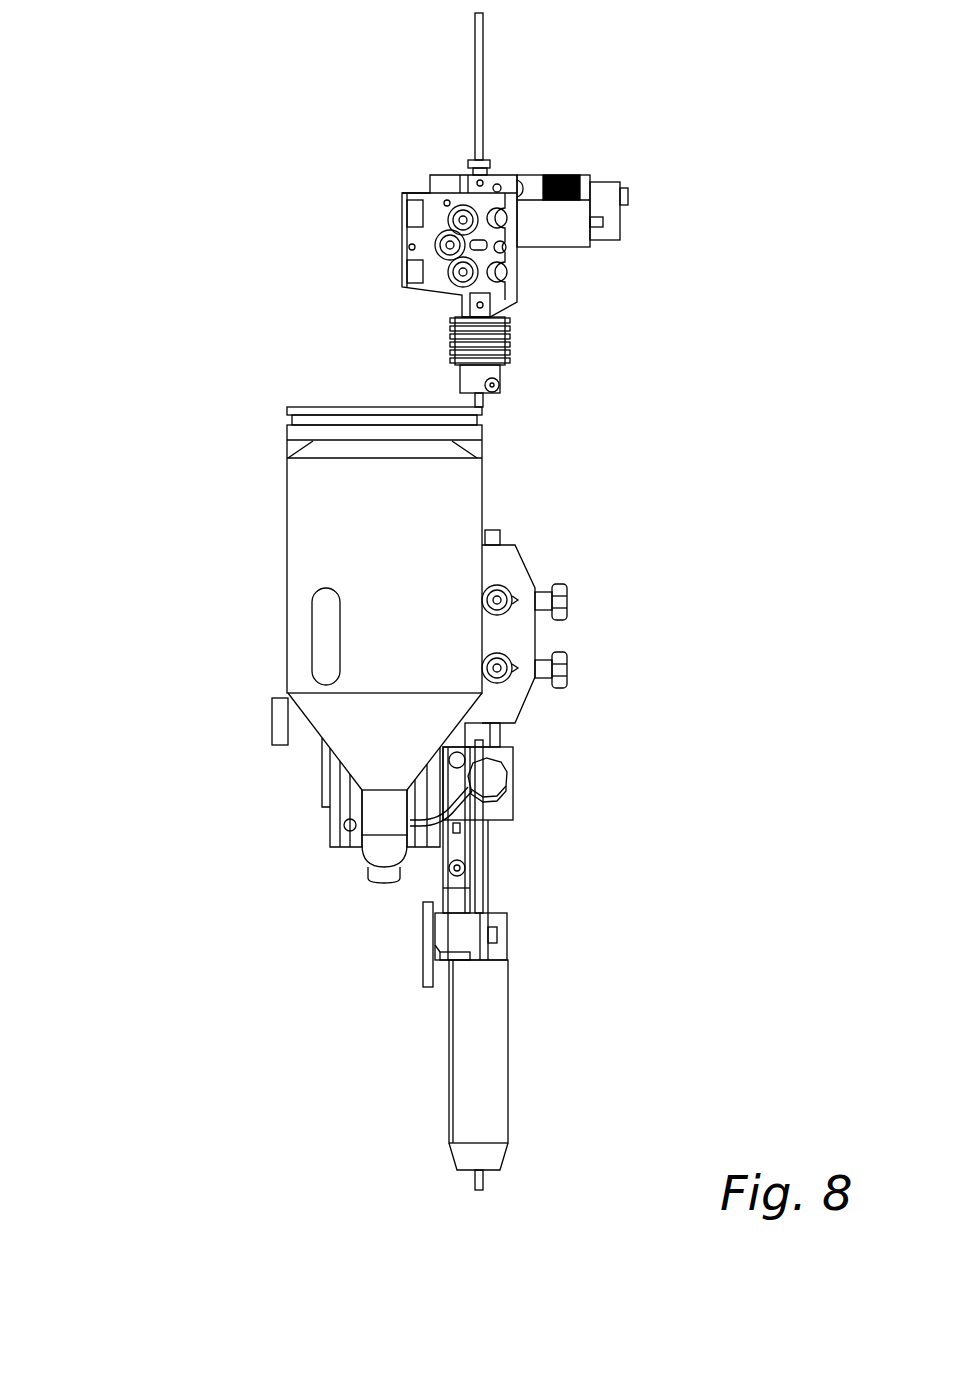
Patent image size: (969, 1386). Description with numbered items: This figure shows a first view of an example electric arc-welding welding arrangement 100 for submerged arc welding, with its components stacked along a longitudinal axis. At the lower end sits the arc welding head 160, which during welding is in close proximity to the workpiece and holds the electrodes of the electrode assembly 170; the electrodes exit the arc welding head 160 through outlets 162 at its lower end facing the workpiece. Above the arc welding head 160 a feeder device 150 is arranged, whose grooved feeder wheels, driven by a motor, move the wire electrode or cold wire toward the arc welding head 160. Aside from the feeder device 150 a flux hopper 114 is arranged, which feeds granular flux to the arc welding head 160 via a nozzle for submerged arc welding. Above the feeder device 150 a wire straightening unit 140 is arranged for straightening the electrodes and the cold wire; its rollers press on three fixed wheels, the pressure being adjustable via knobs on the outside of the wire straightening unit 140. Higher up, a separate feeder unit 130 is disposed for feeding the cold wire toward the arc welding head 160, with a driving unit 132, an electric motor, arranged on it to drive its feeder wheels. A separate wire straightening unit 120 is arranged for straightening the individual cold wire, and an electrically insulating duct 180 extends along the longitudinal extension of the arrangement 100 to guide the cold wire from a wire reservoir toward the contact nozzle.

The electric arc-welding welding arrangement 100 is at (250, 243).
The flux hopper 114 is at (287, 567).
The wire straightening unit 120 is at (498, 158).
The feeder unit 130 is at (397, 240).
The driving unit 132 is at (607, 177).
The wire straightening unit 140 is at (562, 560).
The feeder device 150 is at (527, 767).
The arc welding head 160 is at (508, 1050).
The outlets 162 is at (455, 1170).
The electrode assembly 170 is at (485, 1182).
The electrically insulating duct 180 is at (473, 85).